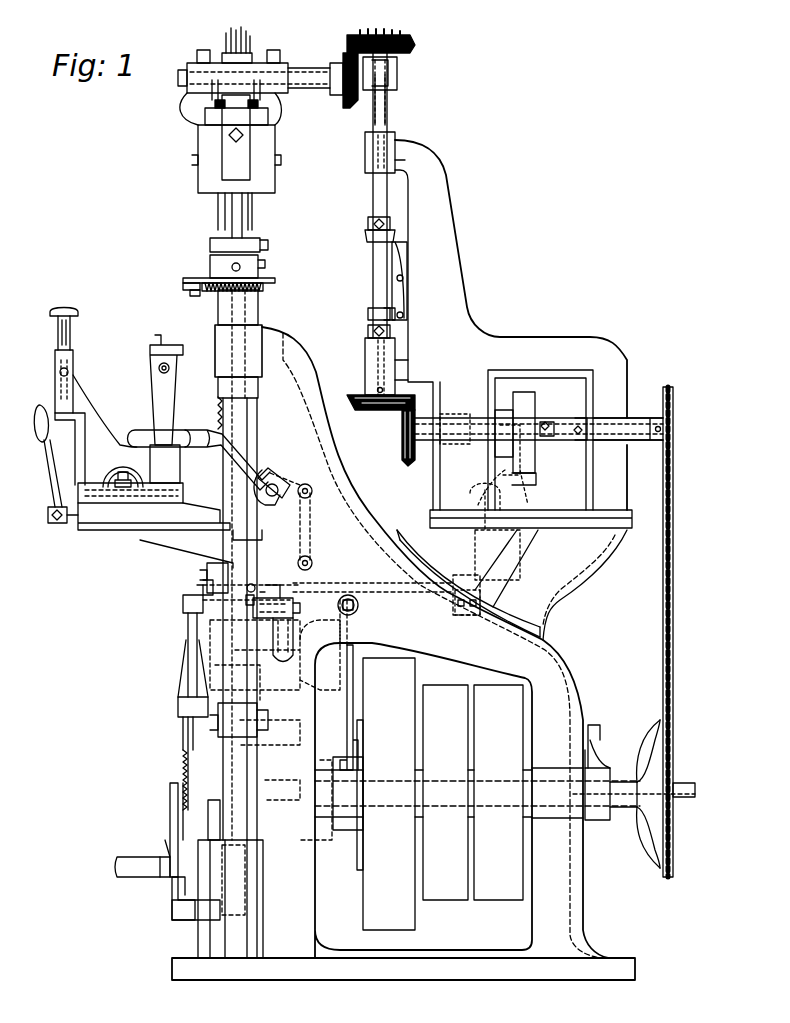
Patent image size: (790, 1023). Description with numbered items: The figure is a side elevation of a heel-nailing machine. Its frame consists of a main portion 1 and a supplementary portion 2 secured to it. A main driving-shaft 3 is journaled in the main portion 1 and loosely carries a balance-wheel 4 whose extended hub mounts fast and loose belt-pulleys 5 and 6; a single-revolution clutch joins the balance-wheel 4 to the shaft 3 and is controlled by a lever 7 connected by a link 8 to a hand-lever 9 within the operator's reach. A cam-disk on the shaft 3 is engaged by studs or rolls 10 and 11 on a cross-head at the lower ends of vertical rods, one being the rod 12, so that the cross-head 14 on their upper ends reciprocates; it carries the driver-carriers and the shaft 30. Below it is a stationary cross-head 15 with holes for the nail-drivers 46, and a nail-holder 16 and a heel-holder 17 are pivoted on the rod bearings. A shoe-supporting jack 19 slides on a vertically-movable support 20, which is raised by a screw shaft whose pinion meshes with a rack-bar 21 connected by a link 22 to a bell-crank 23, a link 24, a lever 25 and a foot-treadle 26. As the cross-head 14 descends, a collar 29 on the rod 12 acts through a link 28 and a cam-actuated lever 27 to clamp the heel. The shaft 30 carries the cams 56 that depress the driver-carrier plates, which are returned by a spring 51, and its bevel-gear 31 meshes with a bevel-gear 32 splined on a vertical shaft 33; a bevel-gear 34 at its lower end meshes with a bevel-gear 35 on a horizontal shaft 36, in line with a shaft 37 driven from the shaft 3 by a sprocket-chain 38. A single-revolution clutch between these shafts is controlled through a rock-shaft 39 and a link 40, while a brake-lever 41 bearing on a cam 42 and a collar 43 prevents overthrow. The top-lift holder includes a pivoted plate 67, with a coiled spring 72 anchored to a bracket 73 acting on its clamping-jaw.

The main portion of the frame 1 is at (553, 655).
The supplementary portion of the frame 2 is at (466, 303).
The main driving-shaft 3 is at (616, 778).
The balance-wheel 4 is at (363, 893).
The fast belt-pulley 5 is at (450, 897).
The loose belt-pulley 6 is at (496, 897).
The lever 7 is at (347, 707).
The link 8 is at (312, 531).
The hand-lever 9 is at (200, 425).
The stud or roll 10 is at (192, 810).
The stud or roll 11 is at (263, 872).
The vertical rod 12 is at (240, 423).
The cross-head 14 is at (198, 172).
The stationary cross-head 15 is at (210, 262).
The nail-holder 16 is at (212, 242).
The heel-holder 17 is at (190, 279).
The shoe-supporting jack 19 is at (100, 410).
The vertically-movable support 20 is at (160, 540).
The rack-bar 21 is at (205, 578).
The link 22 is at (183, 597).
The bell-crank 23 is at (188, 630).
The link 24 is at (180, 726).
The lever 25 is at (172, 893).
The foot-treadle 26 is at (127, 862).
The cam-actuated lever 27 is at (290, 618).
The link 28 is at (293, 645).
The collar 29 is at (257, 735).
The shaft 30 is at (300, 66).
The bevel-gear 31 is at (350, 110).
The bevel-gear 32 is at (405, 45).
The vertical shaft 33 is at (373, 196).
The bevel-gear 34 is at (365, 394).
The bevel-gear 35 is at (402, 452).
The horizontal shaft 36 is at (453, 418).
The shaft 37 is at (632, 416).
The sprocket-chain 38 is at (677, 560).
The rock-shaft 39 is at (405, 590).
The link 40 is at (341, 650).
The brake-lever 41 is at (395, 262).
The cam 42 is at (368, 233).
The collar 43 is at (368, 316).
The nail-drivers 46 is at (252, 225).
The spring 51 is at (200, 112).
The cams 56 is at (247, 42).
The plate 67 is at (185, 288).
The coiled spring 72 is at (265, 287).
The bracket 73 is at (198, 290).